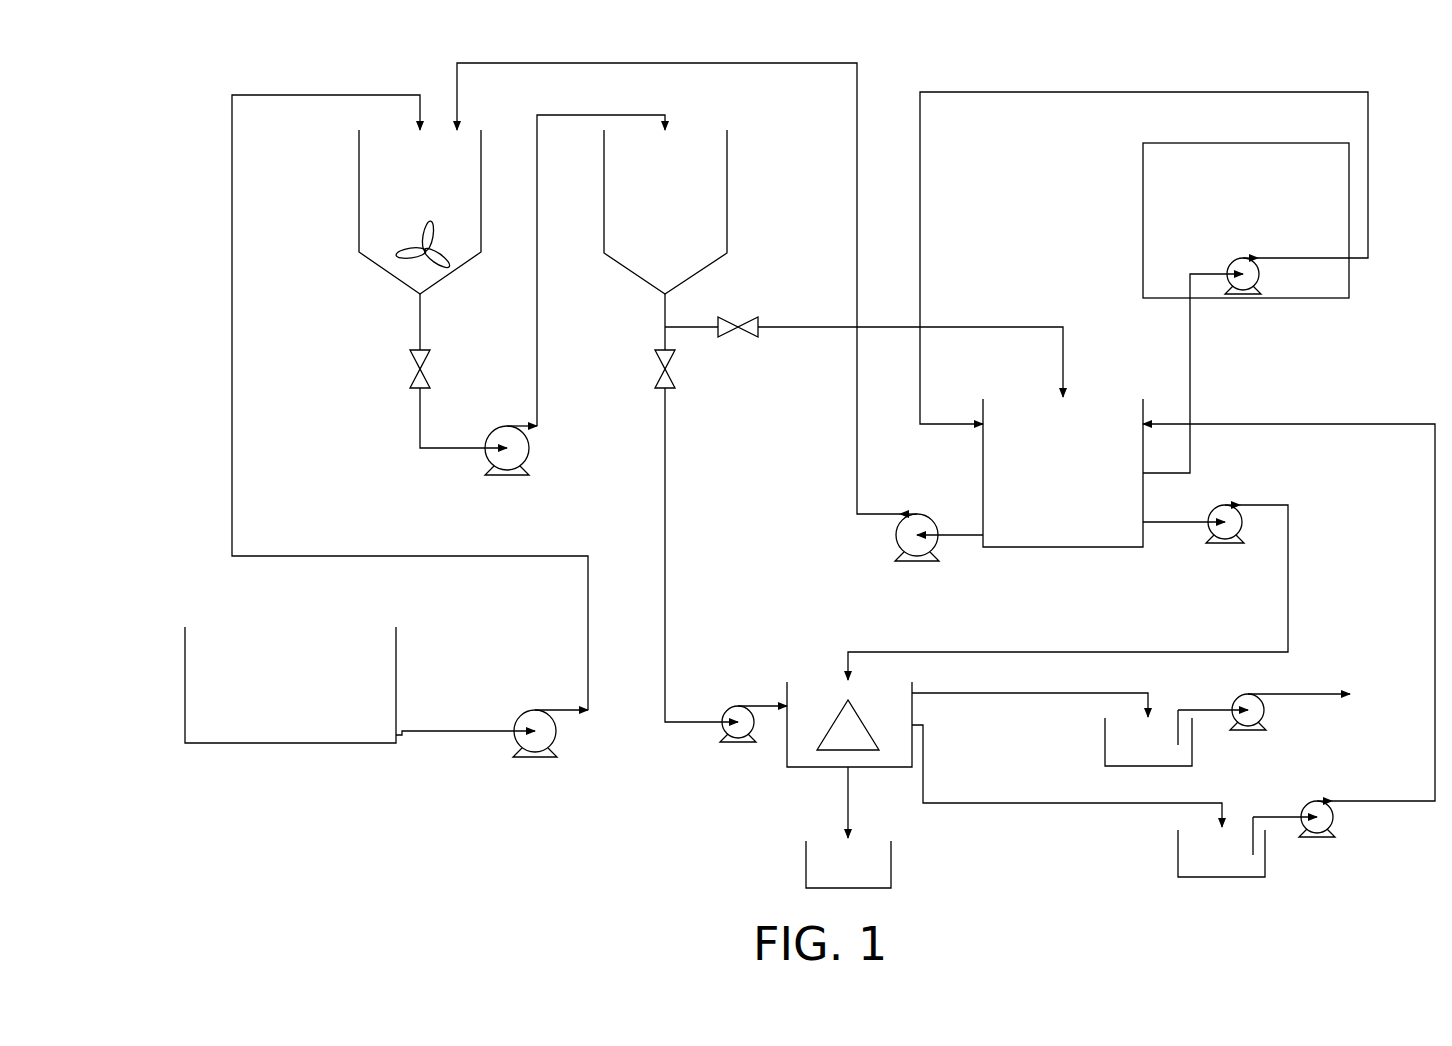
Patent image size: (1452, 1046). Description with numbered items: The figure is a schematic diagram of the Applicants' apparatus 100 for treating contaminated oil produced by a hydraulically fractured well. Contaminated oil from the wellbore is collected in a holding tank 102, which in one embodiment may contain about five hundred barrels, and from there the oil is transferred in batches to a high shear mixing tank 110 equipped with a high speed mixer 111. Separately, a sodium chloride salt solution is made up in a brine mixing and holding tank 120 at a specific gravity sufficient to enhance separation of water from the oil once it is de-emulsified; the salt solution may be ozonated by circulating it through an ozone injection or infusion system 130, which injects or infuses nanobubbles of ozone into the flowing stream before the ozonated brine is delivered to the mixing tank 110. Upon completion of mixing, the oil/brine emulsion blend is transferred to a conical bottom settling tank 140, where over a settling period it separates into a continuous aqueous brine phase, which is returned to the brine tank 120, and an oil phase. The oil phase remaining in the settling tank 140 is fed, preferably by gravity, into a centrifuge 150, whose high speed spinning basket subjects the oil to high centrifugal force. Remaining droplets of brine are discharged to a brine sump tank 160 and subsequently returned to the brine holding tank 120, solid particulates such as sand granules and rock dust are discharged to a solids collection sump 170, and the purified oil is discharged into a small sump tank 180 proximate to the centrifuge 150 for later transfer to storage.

The apparatus 100 is at (175, 112).
The holding tank 102 is at (236, 743).
The high shear mixing tank 110 is at (359, 232).
The high speed mixer 111 is at (417, 257).
The brine mixing and holding tank 120 is at (1083, 547).
The ozone injection or infusion system 130 is at (1143, 191).
The conical bottom settling tank 140 is at (727, 192).
The centrifuge 150 is at (787, 752).
The brine sump tank 160 is at (1178, 853).
The solids collection sump 170 is at (806, 865).
The small sump tank 180 is at (1105, 733).